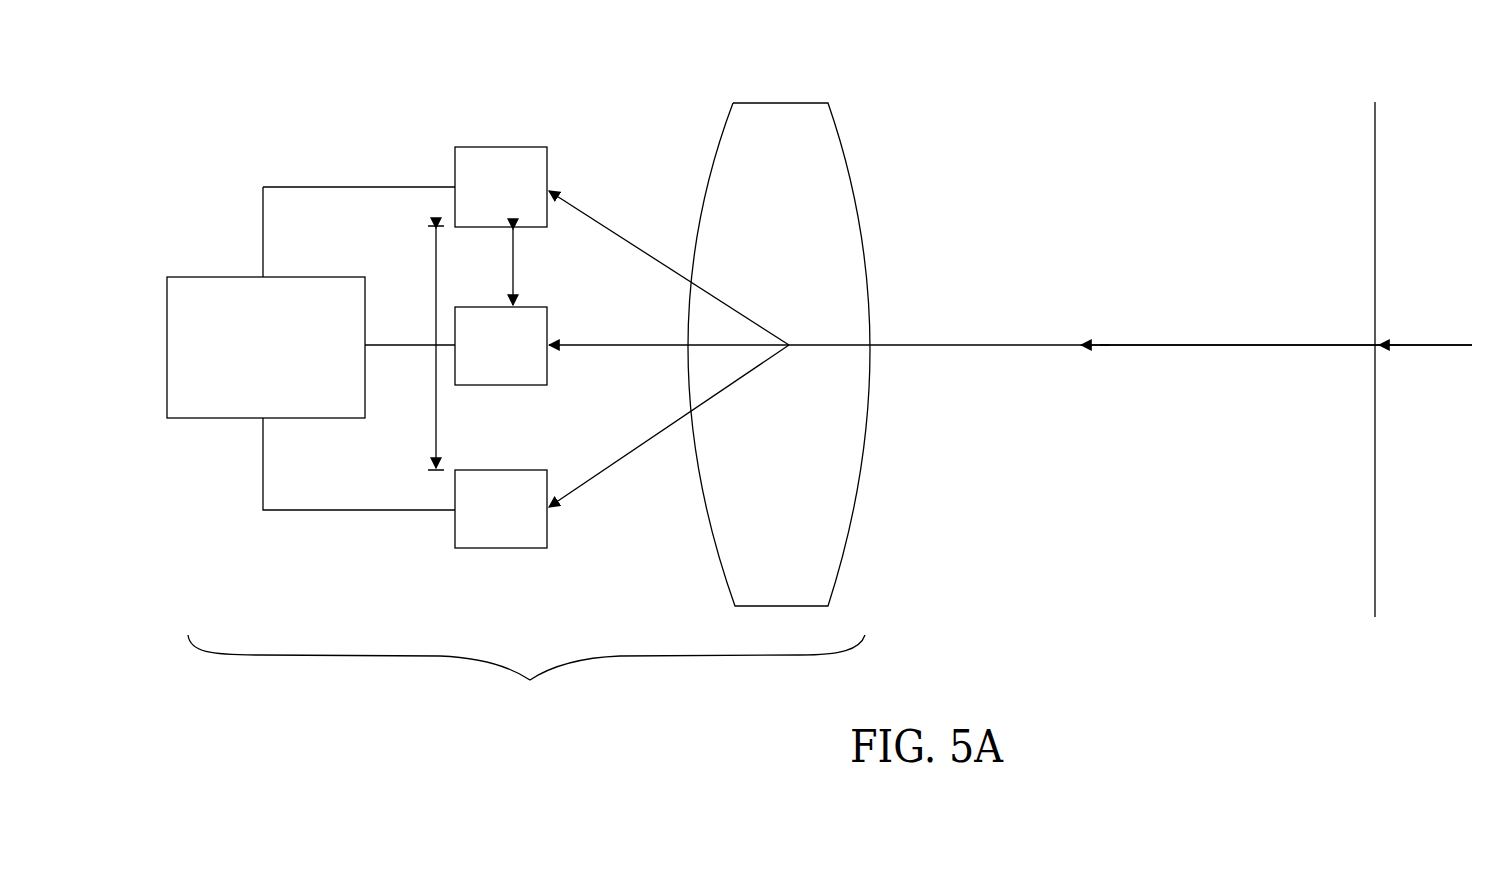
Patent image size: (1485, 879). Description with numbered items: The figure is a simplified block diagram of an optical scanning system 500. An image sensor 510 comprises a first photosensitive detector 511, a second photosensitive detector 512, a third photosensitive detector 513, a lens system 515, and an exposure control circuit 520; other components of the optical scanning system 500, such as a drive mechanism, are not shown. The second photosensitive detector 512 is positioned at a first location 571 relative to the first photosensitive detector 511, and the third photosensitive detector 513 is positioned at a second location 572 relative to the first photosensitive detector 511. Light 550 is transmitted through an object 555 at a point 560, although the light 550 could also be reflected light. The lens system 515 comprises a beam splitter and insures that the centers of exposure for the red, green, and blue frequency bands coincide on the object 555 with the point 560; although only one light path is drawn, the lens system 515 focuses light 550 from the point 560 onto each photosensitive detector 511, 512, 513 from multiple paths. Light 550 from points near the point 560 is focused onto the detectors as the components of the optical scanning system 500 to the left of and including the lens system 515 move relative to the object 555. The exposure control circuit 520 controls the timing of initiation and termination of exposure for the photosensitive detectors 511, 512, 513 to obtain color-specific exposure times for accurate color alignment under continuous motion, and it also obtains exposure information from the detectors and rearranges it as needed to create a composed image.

The optical scanning system 500 is at (526, 673).
The image sensor 510 is at (461, 324).
The first photosensitive detector 511 is at (455, 202).
The second photosensitive detector 512 is at (490, 385).
The third photosensitive detector 513 is at (517, 548).
The lens system 515 is at (852, 188).
The exposure control circuit 520 is at (200, 418).
The light 550 is at (1433, 345).
The object 555 is at (1375, 160).
The point 560 is at (1372, 345).
The first location 571 is at (513, 266).
The second location 572 is at (435, 402).